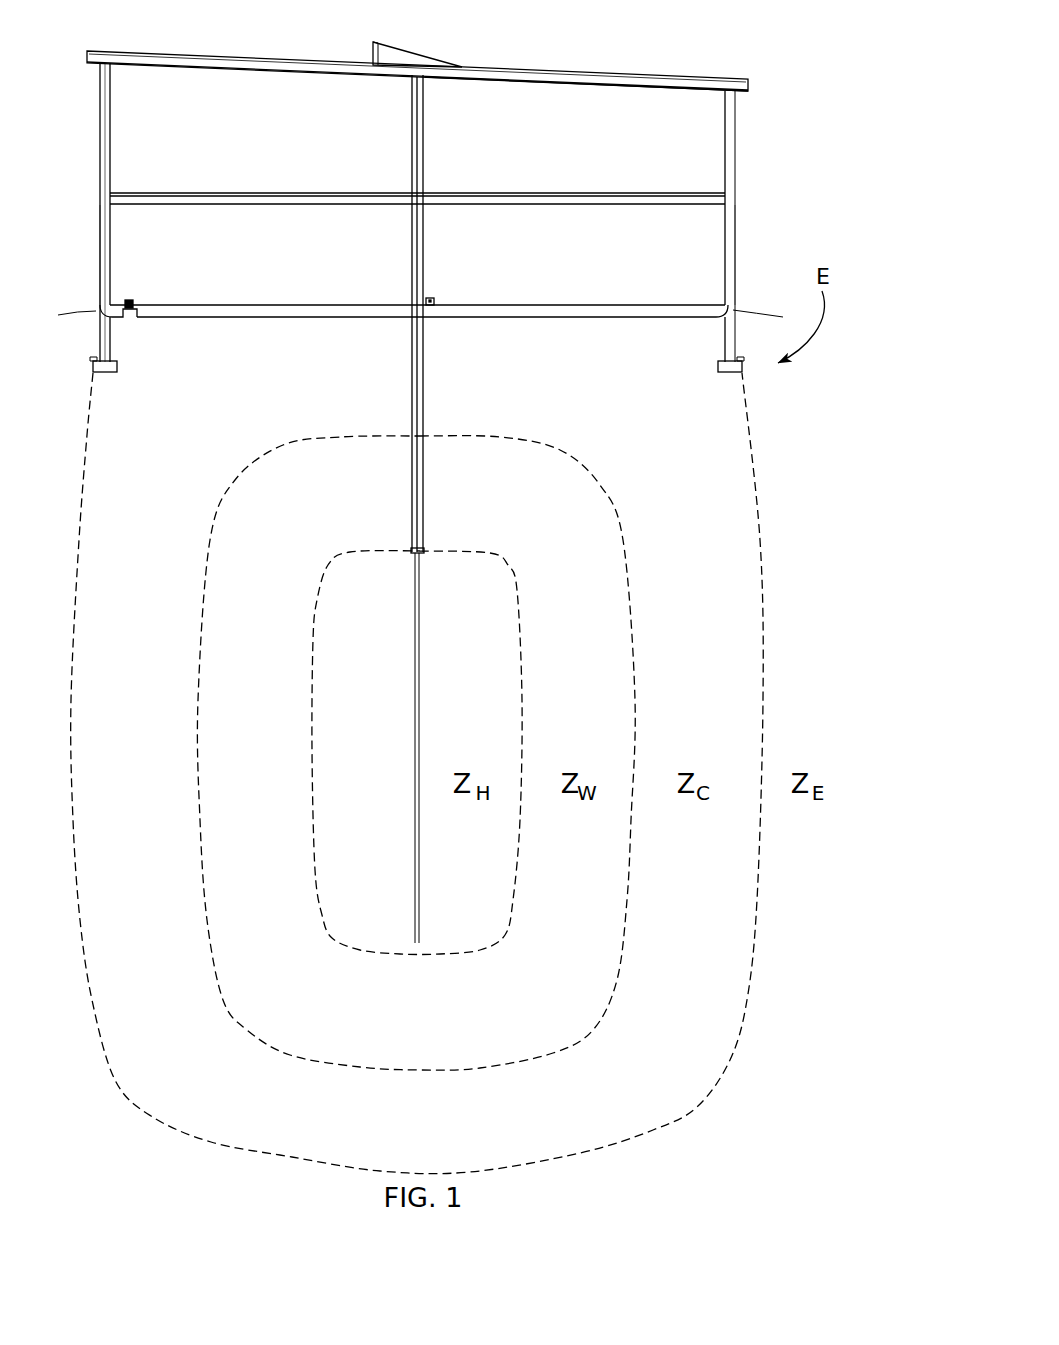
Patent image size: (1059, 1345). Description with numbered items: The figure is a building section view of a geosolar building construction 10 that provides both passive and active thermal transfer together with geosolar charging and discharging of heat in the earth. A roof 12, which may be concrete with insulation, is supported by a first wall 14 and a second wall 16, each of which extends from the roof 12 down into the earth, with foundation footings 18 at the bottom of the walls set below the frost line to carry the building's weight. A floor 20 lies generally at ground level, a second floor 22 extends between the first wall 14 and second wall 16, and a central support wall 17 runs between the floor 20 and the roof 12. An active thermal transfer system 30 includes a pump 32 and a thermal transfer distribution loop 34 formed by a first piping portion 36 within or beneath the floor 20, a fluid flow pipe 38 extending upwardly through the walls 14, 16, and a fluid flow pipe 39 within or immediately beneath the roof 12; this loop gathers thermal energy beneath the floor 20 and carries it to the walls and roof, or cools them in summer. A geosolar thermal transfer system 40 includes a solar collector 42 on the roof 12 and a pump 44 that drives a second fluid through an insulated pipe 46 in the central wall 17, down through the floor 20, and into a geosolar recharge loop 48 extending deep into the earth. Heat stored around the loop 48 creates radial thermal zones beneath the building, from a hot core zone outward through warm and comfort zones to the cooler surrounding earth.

The geosolar building construction 10 is at (799, 96).
The roof 12 is at (659, 75).
The first wall 14 is at (100, 187).
The second wall 16 is at (736, 193).
The central support wall 17 is at (425, 243).
The foundation footings 18 is at (109, 377).
The floor 20 is at (574, 294).
The second floor 22 is at (553, 183).
The active thermal transfer system 30 is at (180, 281).
The pump 32 is at (128, 313).
The thermal transfer distribution loop 34 is at (117, 157).
The first piping portion 36 is at (153, 312).
The fluid flow pipe 38 is at (107, 273).
The fluid flow pipe 39 is at (559, 96).
The geosolar thermal transfer system 40 is at (452, 33).
The solar collector 42 is at (398, 47).
The pump 44 is at (431, 306).
The pipe 46 is at (420, 283).
The geosolar recharge loop 48 is at (424, 712).